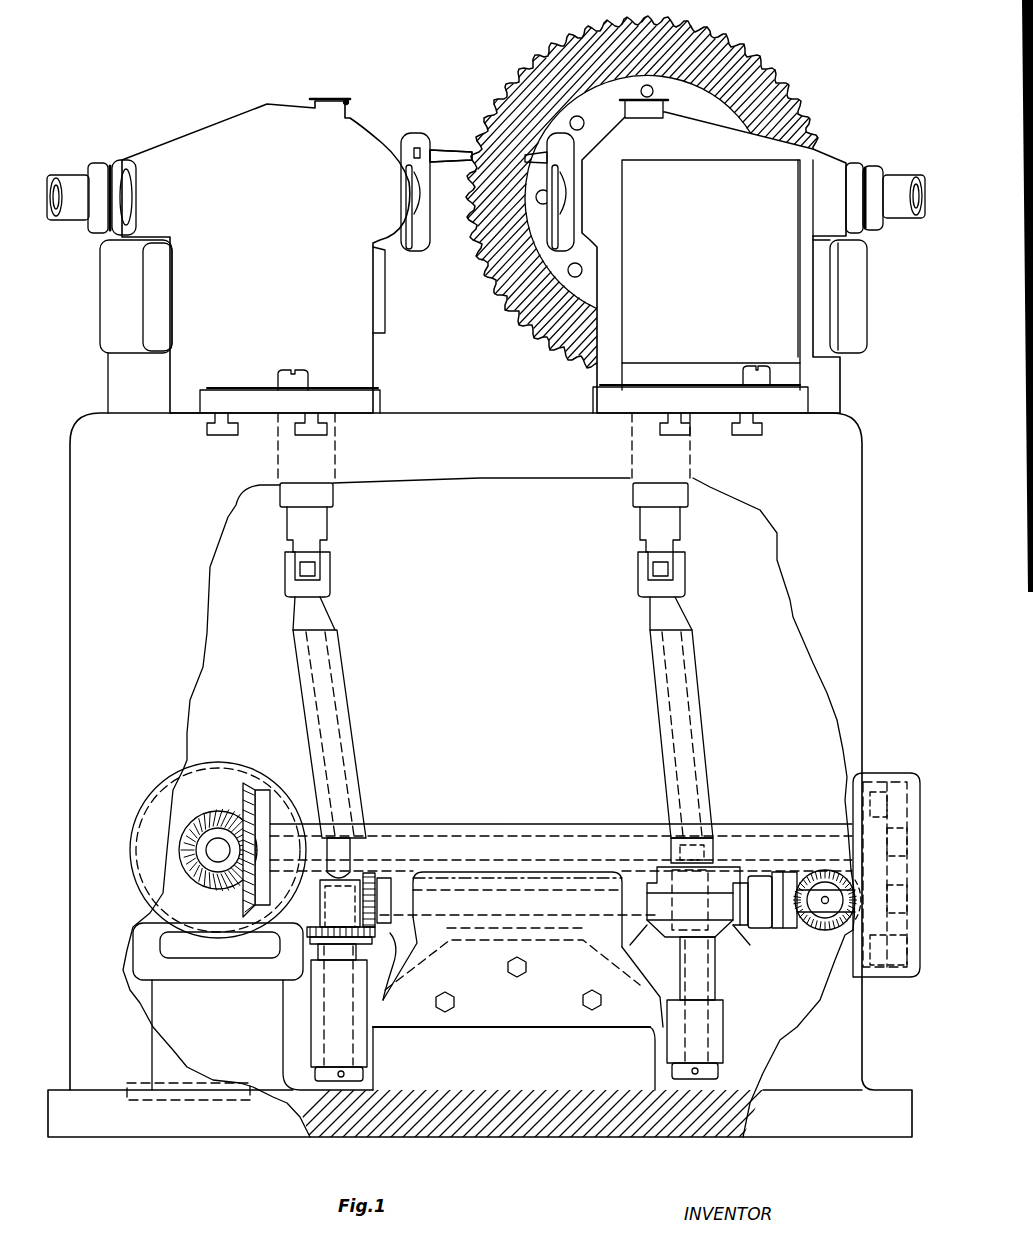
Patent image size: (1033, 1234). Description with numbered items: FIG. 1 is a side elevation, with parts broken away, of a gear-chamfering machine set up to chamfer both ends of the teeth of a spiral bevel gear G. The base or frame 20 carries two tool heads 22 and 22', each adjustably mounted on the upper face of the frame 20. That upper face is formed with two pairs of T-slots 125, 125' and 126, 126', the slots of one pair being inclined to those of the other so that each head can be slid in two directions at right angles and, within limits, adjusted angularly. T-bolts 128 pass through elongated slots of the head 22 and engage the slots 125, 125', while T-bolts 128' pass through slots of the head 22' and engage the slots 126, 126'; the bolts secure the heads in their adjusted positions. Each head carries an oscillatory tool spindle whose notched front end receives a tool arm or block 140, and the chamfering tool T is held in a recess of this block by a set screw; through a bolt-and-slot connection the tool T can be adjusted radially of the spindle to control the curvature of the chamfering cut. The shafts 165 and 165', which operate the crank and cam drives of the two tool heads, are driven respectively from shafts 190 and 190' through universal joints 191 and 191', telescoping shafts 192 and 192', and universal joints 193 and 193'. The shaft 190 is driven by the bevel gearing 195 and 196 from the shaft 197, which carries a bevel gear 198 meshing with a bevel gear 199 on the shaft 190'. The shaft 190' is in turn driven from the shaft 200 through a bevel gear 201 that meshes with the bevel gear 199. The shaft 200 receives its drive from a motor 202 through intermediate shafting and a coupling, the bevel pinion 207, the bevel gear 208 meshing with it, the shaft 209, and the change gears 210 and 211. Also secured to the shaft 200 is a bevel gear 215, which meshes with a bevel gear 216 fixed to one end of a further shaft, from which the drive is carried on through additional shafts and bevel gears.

The base or frame 20 is at (845, 648).
The tool head 22 is at (228, 256).
The tool head 22' is at (753, 249).
The T-slots 125 is at (214, 442).
The T-bolt 125' is at (307, 441).
The T-slots 126 is at (665, 441).
The T-bolt 126' is at (746, 439).
The T-bolts 128 is at (313, 365).
The T-bolts 128' is at (730, 374).
The tool arm or block 140 is at (426, 236).
The shaft 165 is at (331, 482).
The shaft 165' is at (687, 482).
The shaft 190 is at (371, 1012).
The shaft 190' is at (579, 1008).
The universal joint 191 is at (319, 885).
The universal joint 191' is at (723, 827).
The telescoping shaft 192 is at (355, 734).
The telescoping shaft 192' is at (705, 734).
The universal joint 193 is at (339, 590).
The universal joint 193' is at (693, 590).
The bevel gear 195 is at (382, 922).
The bevel gear 196 is at (325, 952).
The shaft 197 is at (508, 900).
The bevel gear 198 is at (637, 947).
The bevel gear 199 is at (718, 937).
The shaft 200 is at (795, 918).
The bevel gear 201 is at (762, 912).
The motor 202 is at (186, 922).
The bevel pinion 207 is at (222, 872).
The bevel gear 208 is at (250, 910).
The shaft 209 is at (510, 848).
The change gear 210 is at (882, 793).
The change gear 211 is at (880, 958).
The bevel gear 215 is at (829, 926).
The bevel gear 216 is at (852, 945).
The gear G is at (507, 302).
The tool T is at (450, 152).